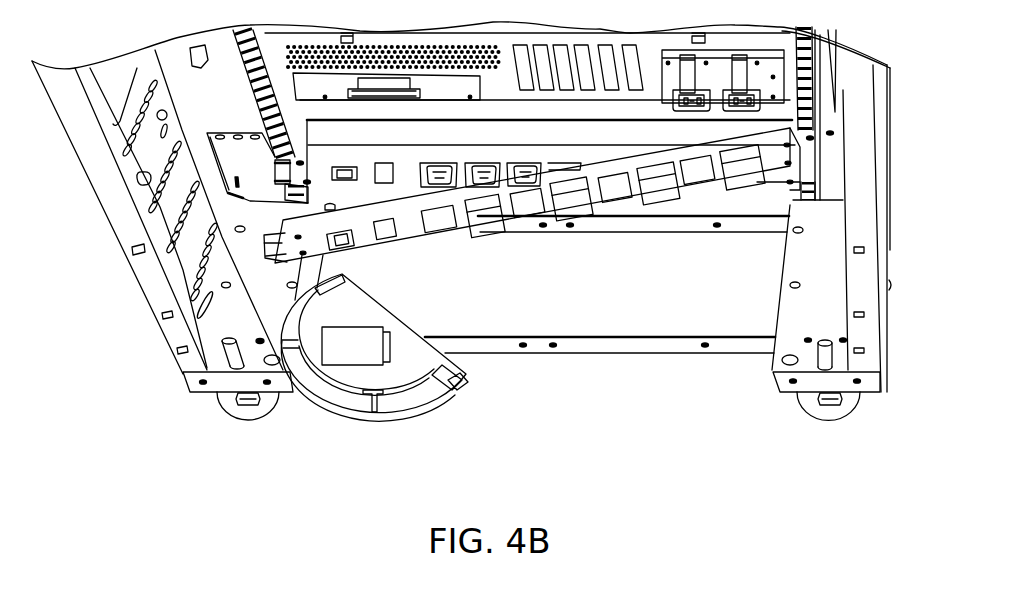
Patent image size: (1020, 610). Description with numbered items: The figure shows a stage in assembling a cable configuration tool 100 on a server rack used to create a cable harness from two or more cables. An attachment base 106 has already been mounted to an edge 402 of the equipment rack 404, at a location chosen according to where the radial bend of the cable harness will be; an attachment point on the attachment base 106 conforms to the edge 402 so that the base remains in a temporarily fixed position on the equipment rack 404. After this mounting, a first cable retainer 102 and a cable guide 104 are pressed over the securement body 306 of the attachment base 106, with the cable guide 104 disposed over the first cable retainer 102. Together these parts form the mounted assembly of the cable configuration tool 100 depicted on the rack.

The cable configuration tool 100 is at (508, 388).
The first cable retainer 102 is at (435, 390).
The cable guide 104 is at (407, 378).
The attachment base 106 is at (385, 352).
The securement body 306 is at (357, 352).
The edge 402 is at (537, 337).
The equipment rack 404 is at (147, 278).